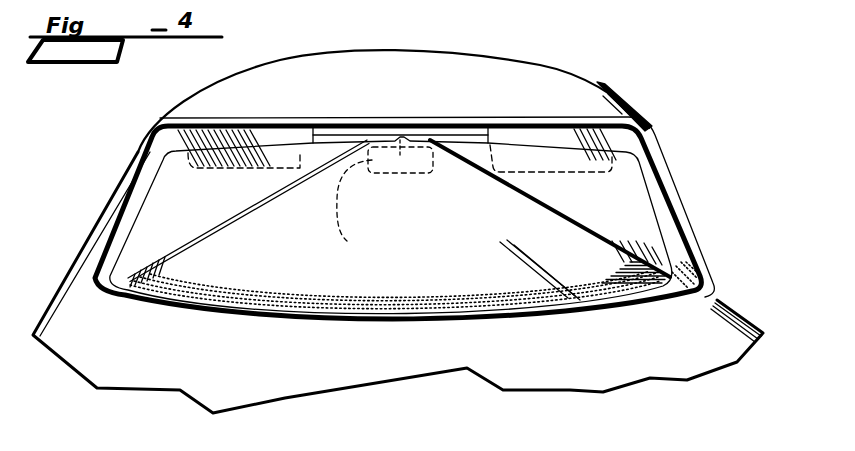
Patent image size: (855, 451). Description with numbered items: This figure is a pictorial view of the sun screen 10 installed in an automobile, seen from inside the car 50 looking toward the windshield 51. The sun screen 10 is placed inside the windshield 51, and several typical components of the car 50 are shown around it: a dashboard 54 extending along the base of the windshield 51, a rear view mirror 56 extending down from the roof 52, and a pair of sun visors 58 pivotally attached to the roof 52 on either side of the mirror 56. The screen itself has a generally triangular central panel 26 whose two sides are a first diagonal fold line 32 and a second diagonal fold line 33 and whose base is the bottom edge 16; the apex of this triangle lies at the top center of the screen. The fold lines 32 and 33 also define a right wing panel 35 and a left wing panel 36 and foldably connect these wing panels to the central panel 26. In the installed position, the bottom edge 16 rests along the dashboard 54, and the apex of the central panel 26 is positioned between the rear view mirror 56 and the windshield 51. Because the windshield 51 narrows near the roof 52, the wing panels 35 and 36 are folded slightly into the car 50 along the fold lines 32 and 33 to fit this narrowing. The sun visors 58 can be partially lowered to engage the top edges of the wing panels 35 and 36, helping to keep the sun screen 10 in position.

The sun screen 10 is at (155, 228).
The bottom edge 16 is at (481, 292).
The central panel 26 is at (418, 227).
The first diagonal fold line 32 is at (222, 228).
The second diagonal fold line 33 is at (538, 203).
The right wing panel 35 is at (217, 204).
The left wing panel 36 is at (619, 204).
The car 50 is at (643, 90).
The windshield 51 is at (660, 197).
The roof 52 is at (513, 73).
The dashboard 54 is at (688, 268).
The rear view mirror 56 is at (385, 202).
The sun visors 58 is at (248, 143).